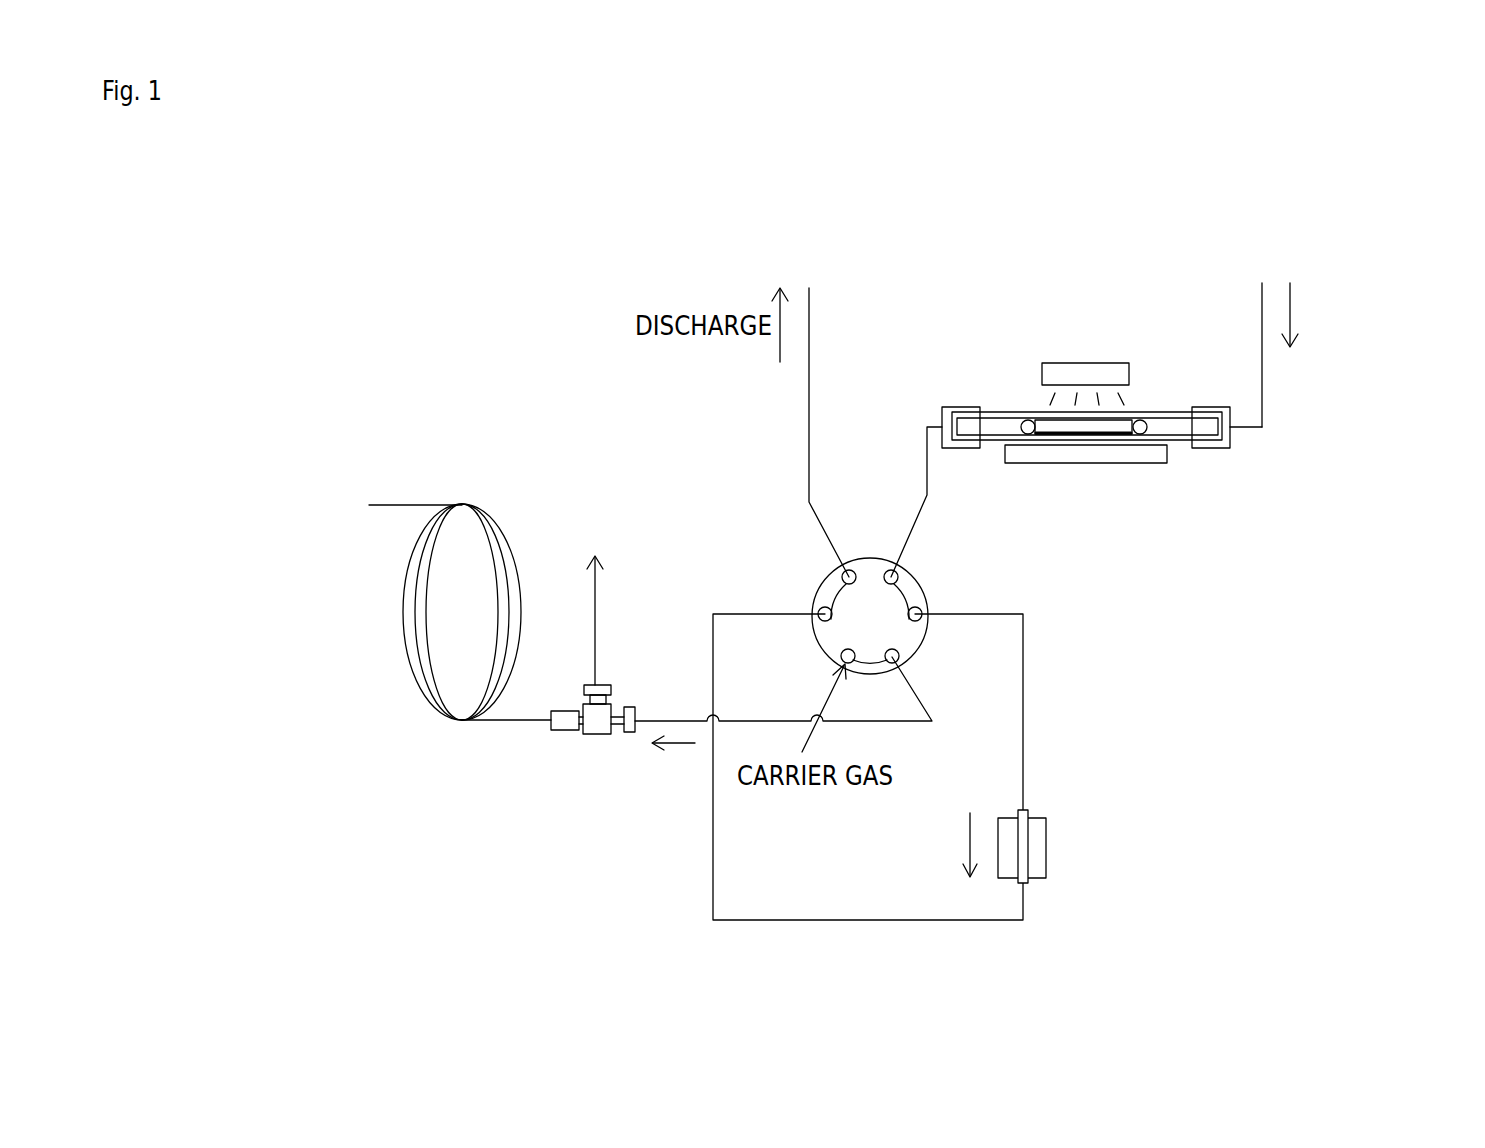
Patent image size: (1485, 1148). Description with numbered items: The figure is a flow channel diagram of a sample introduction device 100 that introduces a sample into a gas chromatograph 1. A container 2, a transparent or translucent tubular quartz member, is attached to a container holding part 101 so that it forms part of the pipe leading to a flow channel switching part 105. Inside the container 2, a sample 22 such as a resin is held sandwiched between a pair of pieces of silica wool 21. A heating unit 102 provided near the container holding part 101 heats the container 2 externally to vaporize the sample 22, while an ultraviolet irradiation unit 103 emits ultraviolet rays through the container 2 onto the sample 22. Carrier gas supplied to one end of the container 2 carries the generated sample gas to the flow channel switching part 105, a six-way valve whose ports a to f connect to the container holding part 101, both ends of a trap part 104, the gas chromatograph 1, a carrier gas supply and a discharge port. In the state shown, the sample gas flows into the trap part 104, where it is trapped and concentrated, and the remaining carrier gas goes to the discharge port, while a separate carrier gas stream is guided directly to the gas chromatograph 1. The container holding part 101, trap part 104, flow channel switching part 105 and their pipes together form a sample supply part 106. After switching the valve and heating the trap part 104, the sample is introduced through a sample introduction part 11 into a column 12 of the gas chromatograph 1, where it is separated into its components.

The gas chromatograph 1 is at (532, 654).
The sample introduction part 11 is at (597, 737).
The column 12 is at (462, 497).
The container 2 is at (1158, 410).
The silica wool 21 is at (1027, 435).
The sample 22 is at (1045, 423).
The sample introduction device 100 is at (1204, 369).
The container holding part 101 is at (1227, 456).
The heating unit 102 is at (1078, 464).
The ultraviolet irradiation unit 103 is at (1083, 361).
The trap part 104 is at (1047, 842).
The flow channel switching part 105 is at (818, 588).
The sample supply part 106 is at (1099, 692).